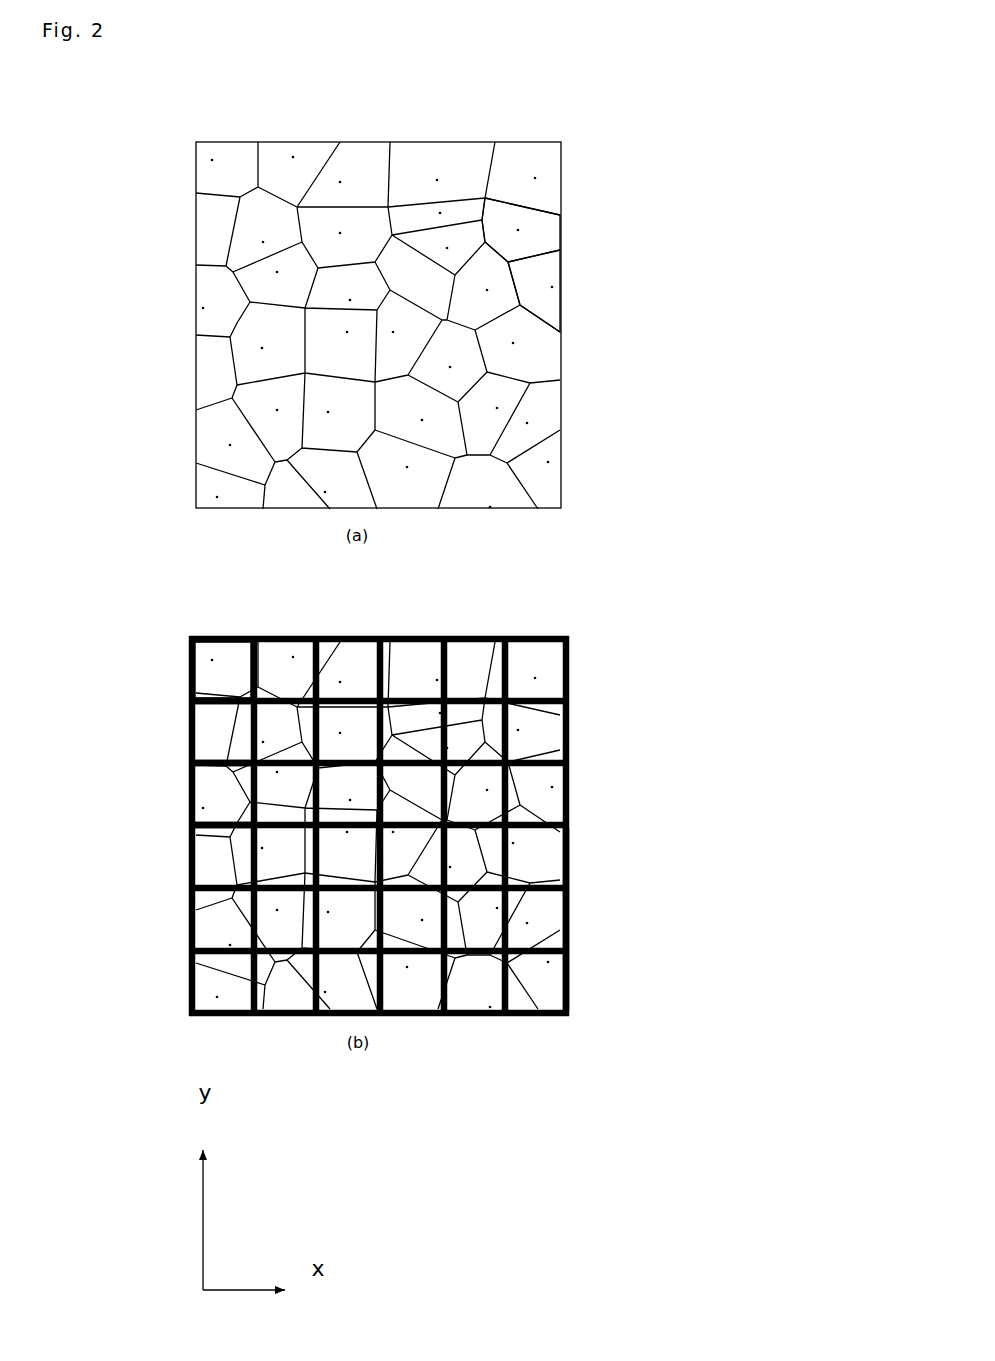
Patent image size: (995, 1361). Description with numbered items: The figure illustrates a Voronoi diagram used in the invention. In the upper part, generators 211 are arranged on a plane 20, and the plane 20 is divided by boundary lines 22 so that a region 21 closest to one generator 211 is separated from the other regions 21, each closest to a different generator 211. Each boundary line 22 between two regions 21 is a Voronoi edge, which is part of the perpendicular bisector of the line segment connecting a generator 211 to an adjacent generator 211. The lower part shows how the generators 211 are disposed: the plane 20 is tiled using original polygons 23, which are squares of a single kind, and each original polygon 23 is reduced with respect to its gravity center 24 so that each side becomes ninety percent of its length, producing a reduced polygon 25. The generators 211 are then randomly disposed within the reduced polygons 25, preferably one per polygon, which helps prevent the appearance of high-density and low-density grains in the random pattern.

The plane 20 is at (588, 197).
The region 21 is at (545, 223).
The generator 211 is at (528, 177).
The boundary line 22 is at (235, 308).
The original polygon 23 is at (568, 862).
The gravity center 24 is at (218, 667).
The reduced polygon 25 is at (200, 699).